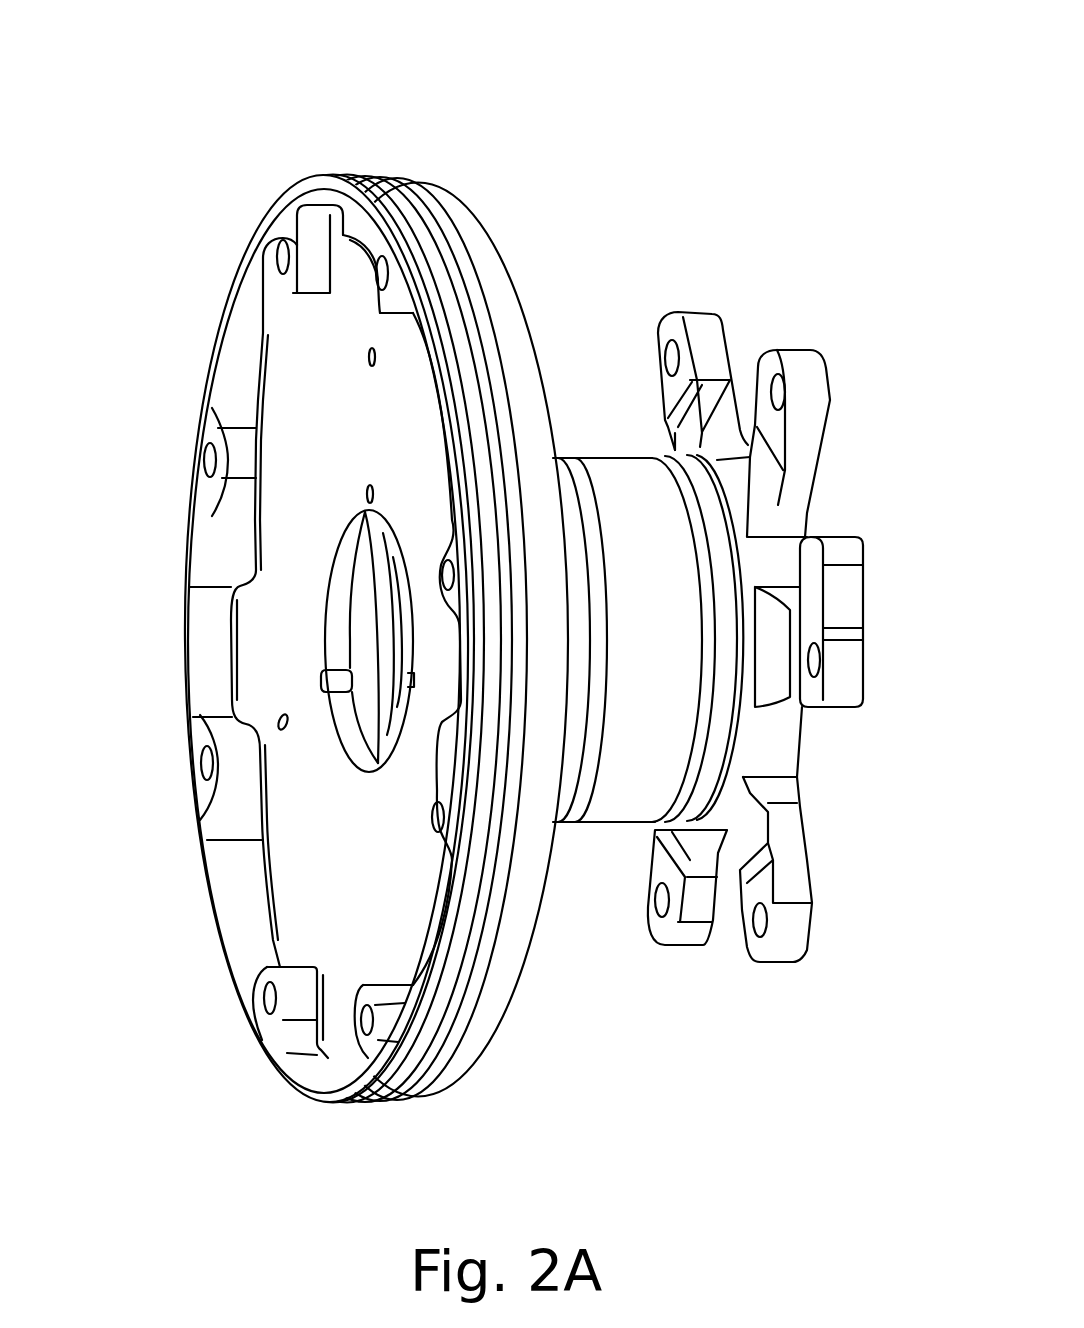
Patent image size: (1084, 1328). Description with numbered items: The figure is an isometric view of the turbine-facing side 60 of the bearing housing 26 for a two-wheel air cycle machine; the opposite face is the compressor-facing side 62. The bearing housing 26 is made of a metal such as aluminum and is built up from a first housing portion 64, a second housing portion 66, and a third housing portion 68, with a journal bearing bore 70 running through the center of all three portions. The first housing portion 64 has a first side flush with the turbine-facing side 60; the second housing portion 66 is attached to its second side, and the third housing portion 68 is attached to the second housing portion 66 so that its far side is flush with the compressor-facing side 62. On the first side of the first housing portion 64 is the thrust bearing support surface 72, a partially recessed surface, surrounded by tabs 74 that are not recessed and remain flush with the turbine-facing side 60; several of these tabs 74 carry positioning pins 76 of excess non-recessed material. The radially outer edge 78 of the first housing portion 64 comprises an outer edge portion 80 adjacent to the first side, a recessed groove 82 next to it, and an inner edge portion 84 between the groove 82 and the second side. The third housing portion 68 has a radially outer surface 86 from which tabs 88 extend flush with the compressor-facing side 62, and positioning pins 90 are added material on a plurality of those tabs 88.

The bearing housing 26 is at (823, 140).
The turbine-facing side 60 is at (222, 342).
The compressor-facing side 62 is at (808, 528).
The first housing portion 64 is at (228, 226).
The second housing portion 66 is at (572, 552).
The third housing portion 68 is at (746, 330).
The journal bearing bore 70 is at (325, 607).
The thrust bearing support surface 72 is at (315, 868).
The tabs 74 is at (358, 1043).
The positioning pins 76 is at (210, 508).
The edge 78 is at (384, 142).
The outer edge portion 80 is at (323, 175).
The groove 82 is at (415, 233).
The inner edge portion 84 is at (490, 268).
The outer surface 86 is at (618, 483).
The tabs 88 is at (815, 382).
The positioning pins 90 is at (848, 598).